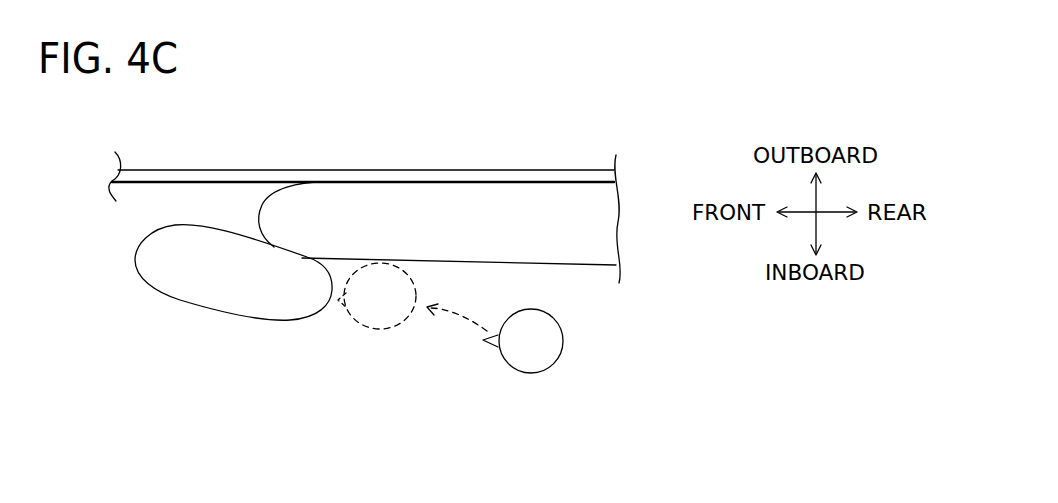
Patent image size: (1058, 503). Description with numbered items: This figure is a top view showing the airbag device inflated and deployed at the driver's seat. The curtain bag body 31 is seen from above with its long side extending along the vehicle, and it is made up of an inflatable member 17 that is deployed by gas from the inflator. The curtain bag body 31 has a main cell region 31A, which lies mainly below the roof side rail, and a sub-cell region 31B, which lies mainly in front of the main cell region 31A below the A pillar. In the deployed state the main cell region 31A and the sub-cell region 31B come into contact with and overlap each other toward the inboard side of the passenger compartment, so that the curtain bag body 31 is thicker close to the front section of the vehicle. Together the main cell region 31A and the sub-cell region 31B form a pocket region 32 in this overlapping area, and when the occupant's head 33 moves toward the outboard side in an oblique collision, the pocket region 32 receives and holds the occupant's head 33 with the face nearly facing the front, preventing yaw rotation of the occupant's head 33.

The curtain bag body 31 is at (388, 120).
The main cell region 31A is at (450, 181).
The sub-cell region 31B is at (173, 298).
The pocket region 32 is at (333, 271).
The occupant's head 33 is at (558, 345).
The inflatable member 17 is at (549, 195).